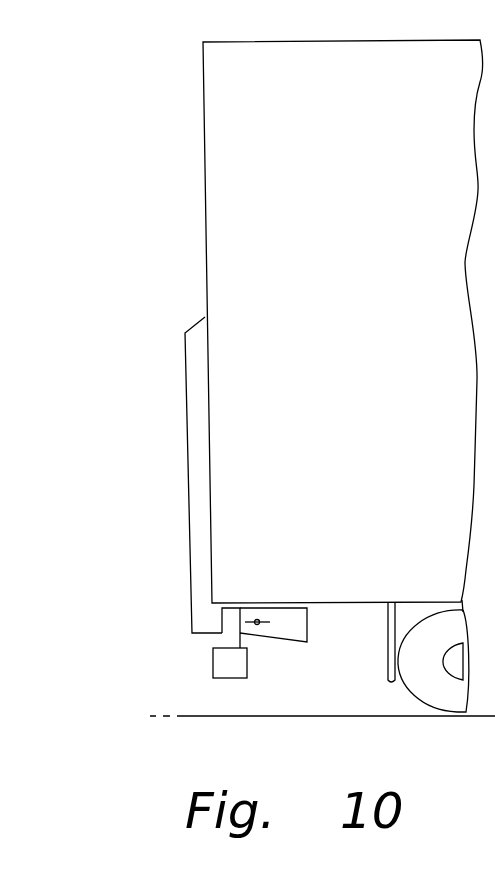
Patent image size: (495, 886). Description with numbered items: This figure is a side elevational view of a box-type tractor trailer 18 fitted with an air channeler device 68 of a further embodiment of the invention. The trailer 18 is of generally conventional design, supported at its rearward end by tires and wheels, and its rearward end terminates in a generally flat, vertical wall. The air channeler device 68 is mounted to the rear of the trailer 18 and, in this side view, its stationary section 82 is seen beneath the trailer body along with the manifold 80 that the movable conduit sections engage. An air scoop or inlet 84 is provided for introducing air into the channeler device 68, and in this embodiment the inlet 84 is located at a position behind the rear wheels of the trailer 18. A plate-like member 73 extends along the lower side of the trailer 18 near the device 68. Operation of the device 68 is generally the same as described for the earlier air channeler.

The tractor trailer 18 is at (336, 41).
The air channeler device 68 is at (175, 458).
The skirt plate 73 is at (195, 321).
The manifold 80 is at (249, 618).
The stationary section 82 is at (262, 636).
The air scoop or inlet 84 is at (287, 641).